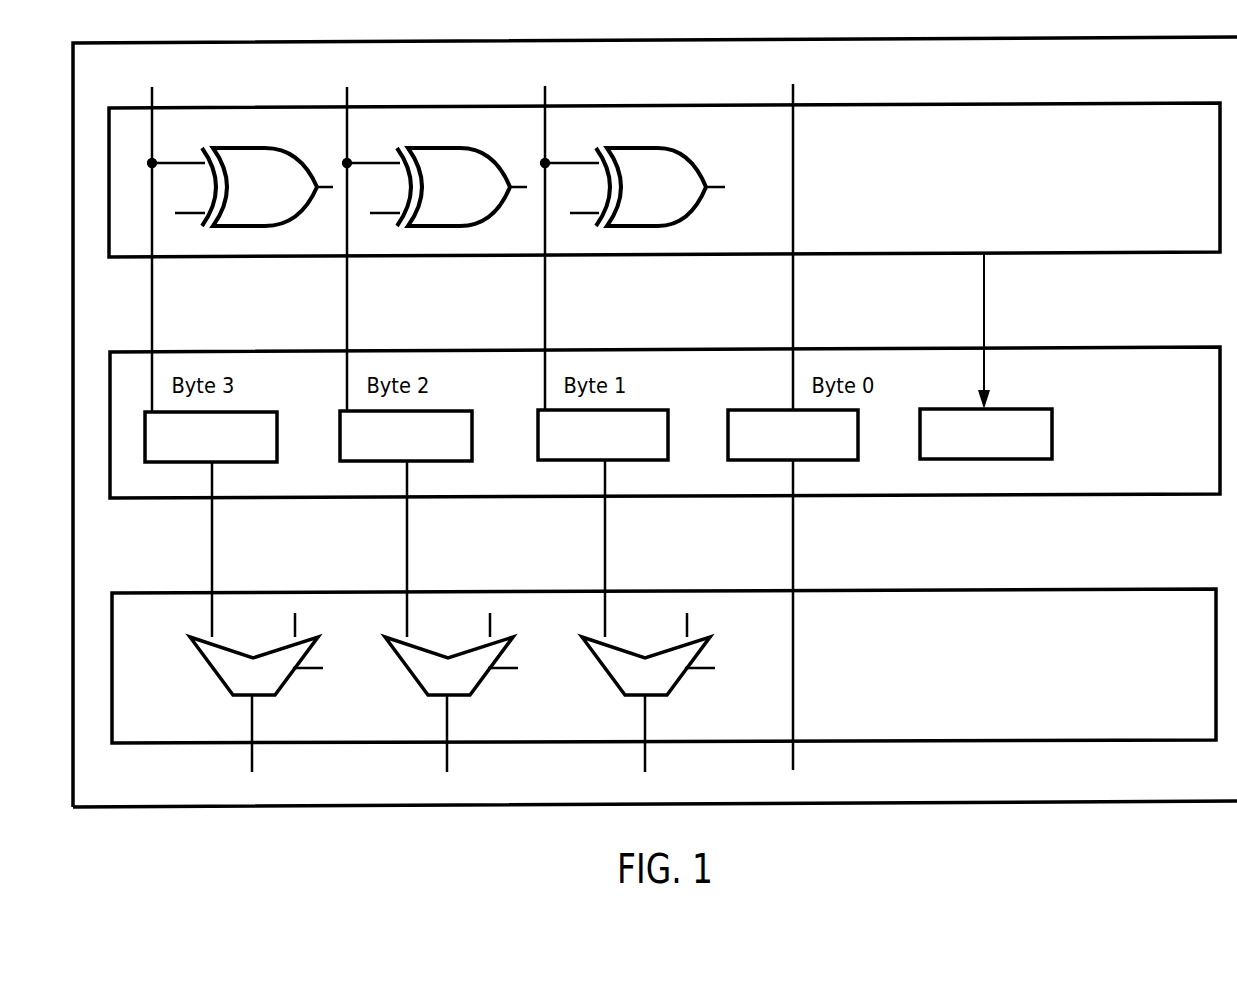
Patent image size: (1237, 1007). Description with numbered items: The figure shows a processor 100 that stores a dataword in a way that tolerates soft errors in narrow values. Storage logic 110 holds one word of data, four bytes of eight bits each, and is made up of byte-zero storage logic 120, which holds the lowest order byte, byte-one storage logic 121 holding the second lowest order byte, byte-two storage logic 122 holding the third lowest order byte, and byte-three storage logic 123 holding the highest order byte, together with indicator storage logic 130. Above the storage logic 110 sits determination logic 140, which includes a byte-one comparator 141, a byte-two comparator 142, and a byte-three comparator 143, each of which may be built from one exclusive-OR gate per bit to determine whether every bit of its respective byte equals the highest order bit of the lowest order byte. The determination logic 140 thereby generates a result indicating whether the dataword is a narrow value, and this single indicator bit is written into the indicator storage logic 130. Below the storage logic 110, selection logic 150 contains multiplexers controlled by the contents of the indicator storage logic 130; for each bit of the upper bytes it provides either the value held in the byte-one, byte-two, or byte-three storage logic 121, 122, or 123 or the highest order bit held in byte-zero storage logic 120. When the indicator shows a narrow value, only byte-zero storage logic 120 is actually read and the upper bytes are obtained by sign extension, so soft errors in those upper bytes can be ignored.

The processor 100 is at (1180, 849).
The storage logic 110 is at (1112, 468).
The byte-0 storage logic 120 is at (813, 450).
The byte-1 storage logic 121 is at (622, 450).
The byte-2 storage logic 122 is at (425, 451).
The byte-3 storage logic 123 is at (229, 452).
The indicator storage logic 130 is at (1006, 449).
The determination logic 140 is at (1111, 225).
The byte-1 comparator 141 is at (674, 202).
The byte-2 comparator 142 is at (478, 202).
The byte-3 comparator 143 is at (283, 202).
The selection logic 150 is at (1109, 715).